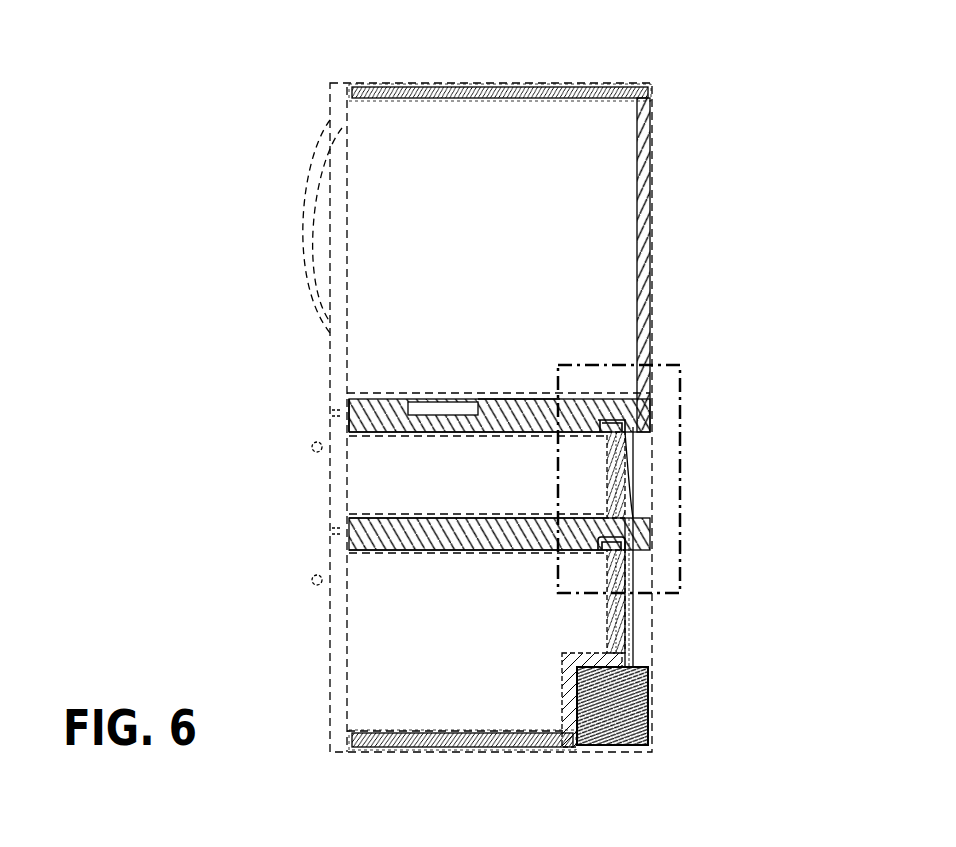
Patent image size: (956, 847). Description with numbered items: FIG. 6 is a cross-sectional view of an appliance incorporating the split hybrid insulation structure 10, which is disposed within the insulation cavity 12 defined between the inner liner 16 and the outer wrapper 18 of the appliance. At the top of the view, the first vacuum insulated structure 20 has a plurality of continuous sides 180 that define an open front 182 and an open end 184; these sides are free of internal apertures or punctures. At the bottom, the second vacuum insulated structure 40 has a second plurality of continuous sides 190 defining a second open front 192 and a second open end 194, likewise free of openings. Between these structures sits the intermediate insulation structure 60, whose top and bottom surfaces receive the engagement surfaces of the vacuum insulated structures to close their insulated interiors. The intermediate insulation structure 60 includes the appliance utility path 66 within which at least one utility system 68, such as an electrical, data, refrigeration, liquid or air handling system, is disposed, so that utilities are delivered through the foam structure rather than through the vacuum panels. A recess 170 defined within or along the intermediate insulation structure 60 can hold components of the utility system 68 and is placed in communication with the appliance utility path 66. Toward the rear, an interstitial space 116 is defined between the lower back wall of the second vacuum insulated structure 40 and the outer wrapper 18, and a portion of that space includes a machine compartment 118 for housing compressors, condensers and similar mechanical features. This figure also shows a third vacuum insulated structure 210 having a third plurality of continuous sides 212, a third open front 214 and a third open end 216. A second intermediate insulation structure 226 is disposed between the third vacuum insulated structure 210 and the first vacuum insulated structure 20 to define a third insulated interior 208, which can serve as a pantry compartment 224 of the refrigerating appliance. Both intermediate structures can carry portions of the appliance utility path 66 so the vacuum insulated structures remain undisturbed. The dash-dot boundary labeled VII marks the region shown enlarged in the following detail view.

The split hybrid insulation structure 10 is at (716, 104).
The insulation cavity 12 is at (476, 80).
The inner liner 16 is at (390, 100).
The outer wrapper 18 is at (400, 82).
The first vacuum insulated structure 20 is at (440, 102).
The second vacuum insulated structure 40 is at (375, 748).
The intermediate insulation structure 60 is at (495, 553).
The appliance utility path 66 is at (640, 537).
The utility system 68 is at (650, 706).
The interstitial space 116 is at (642, 641).
The machine compartment 118 is at (620, 748).
The recess 170 is at (430, 398).
The continuous sides 180 is at (649, 180).
The open front 182 is at (346, 270).
The open end 184 is at (506, 395).
The second plurality of continuous sides 190 is at (566, 690).
The second open front 192 is at (383, 642).
The second open end 194 is at (400, 560).
The third insulated interior 208 is at (390, 490).
The third vacuum insulated structure 210 is at (603, 452).
The third plurality of continuous sides 212 is at (613, 452).
The third open front 214 is at (343, 470).
The third open end 216 is at (388, 512).
The pantry compartment 224 is at (383, 442).
The second intermediate insulation structure 226 is at (345, 407).
The detail view region VII is at (680, 500).